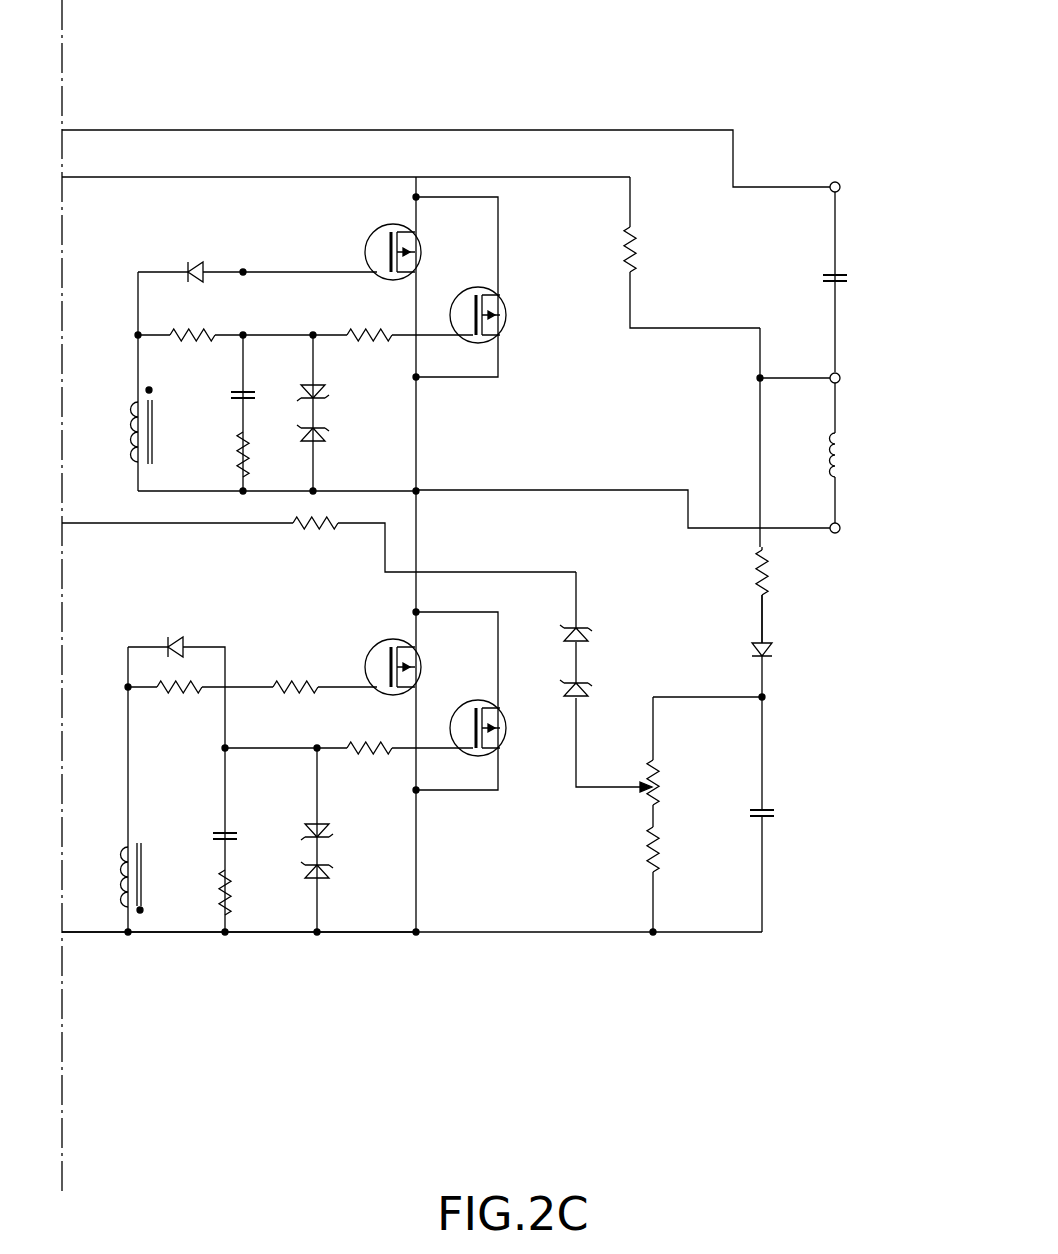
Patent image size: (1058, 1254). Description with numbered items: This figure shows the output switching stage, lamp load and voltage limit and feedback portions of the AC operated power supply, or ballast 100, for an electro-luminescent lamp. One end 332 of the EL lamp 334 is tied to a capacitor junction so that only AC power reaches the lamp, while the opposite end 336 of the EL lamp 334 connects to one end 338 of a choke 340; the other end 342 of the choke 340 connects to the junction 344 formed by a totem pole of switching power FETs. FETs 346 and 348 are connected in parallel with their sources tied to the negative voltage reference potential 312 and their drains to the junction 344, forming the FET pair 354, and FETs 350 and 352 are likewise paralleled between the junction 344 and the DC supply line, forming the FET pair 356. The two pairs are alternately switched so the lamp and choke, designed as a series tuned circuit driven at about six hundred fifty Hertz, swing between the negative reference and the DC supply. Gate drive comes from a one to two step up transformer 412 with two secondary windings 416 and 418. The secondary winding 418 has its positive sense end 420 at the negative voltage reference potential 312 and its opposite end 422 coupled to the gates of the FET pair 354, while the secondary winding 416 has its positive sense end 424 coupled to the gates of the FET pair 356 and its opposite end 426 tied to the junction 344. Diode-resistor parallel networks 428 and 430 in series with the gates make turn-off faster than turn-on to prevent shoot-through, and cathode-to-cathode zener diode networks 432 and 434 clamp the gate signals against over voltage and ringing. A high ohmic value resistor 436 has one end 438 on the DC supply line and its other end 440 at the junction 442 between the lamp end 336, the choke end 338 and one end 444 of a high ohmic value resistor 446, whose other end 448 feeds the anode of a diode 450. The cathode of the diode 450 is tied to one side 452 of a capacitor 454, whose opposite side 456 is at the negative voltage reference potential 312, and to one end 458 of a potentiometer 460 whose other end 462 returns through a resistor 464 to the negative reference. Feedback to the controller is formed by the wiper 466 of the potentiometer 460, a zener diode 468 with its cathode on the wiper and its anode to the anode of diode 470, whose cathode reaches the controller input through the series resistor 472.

The ballast 100 is at (515, 85).
The negative voltage reference potential 312 is at (98, 934).
The one end of the electro-luminescent lamp 332 is at (838, 225).
The electro-luminescent lamp 334 is at (846, 275).
The opposite end of the EL lamp 336 is at (838, 342).
The one end of the choke 338 is at (838, 416).
The choke 340 is at (845, 455).
The other end of the choke 342 is at (838, 506).
The junction 344 is at (418, 488).
The switching power FET 346 is at (378, 640).
The switching power FET 348 is at (470, 702).
The FET 350 is at (375, 232).
The FET 352 is at (505, 305).
The FET pair 354 is at (442, 818).
The FET pair 356 is at (530, 256).
The transformer 412 is at (156, 428).
The secondary winding 416 is at (130, 430).
The secondary winding 418 is at (126, 850).
The end of secondary winding 420 is at (135, 932).
The opposite end of secondary winding 422 is at (130, 785).
The positive sense end of secondary winding 424 is at (135, 365).
The opposite end of secondary winding 426 is at (140, 480).
The diode-resistor parallel network 428 is at (174, 632).
The diode-resistor parallel network 430 is at (179, 243).
The zener diode network 432 is at (344, 850).
The zener diode network 434 is at (345, 420).
The high ohmic value resistor 436 is at (638, 258).
The one end of resistor 438 is at (633, 205).
The other end of resistor 440 is at (758, 348).
The junction 442 is at (790, 376).
The one end of resistor 444 is at (758, 430).
The high ohmic value resistor 446 is at (772, 568).
The other end of resistor 448 is at (768, 622).
The diode 450 is at (775, 656).
The one side of capacitor 452 is at (768, 756).
The capacitor 454 is at (772, 810).
The opposite side of capacitor 456 is at (768, 878).
The one end of potentiometer 458 is at (653, 692).
The potentiometer 460 is at (688, 790).
The other end of potentiometer 462 is at (650, 814).
The resistor 464 is at (650, 905).
The wiper 466 is at (586, 796).
The zener diode 468 is at (582, 700).
The diode 470 is at (586, 628).
The series resistor 472 is at (318, 532).